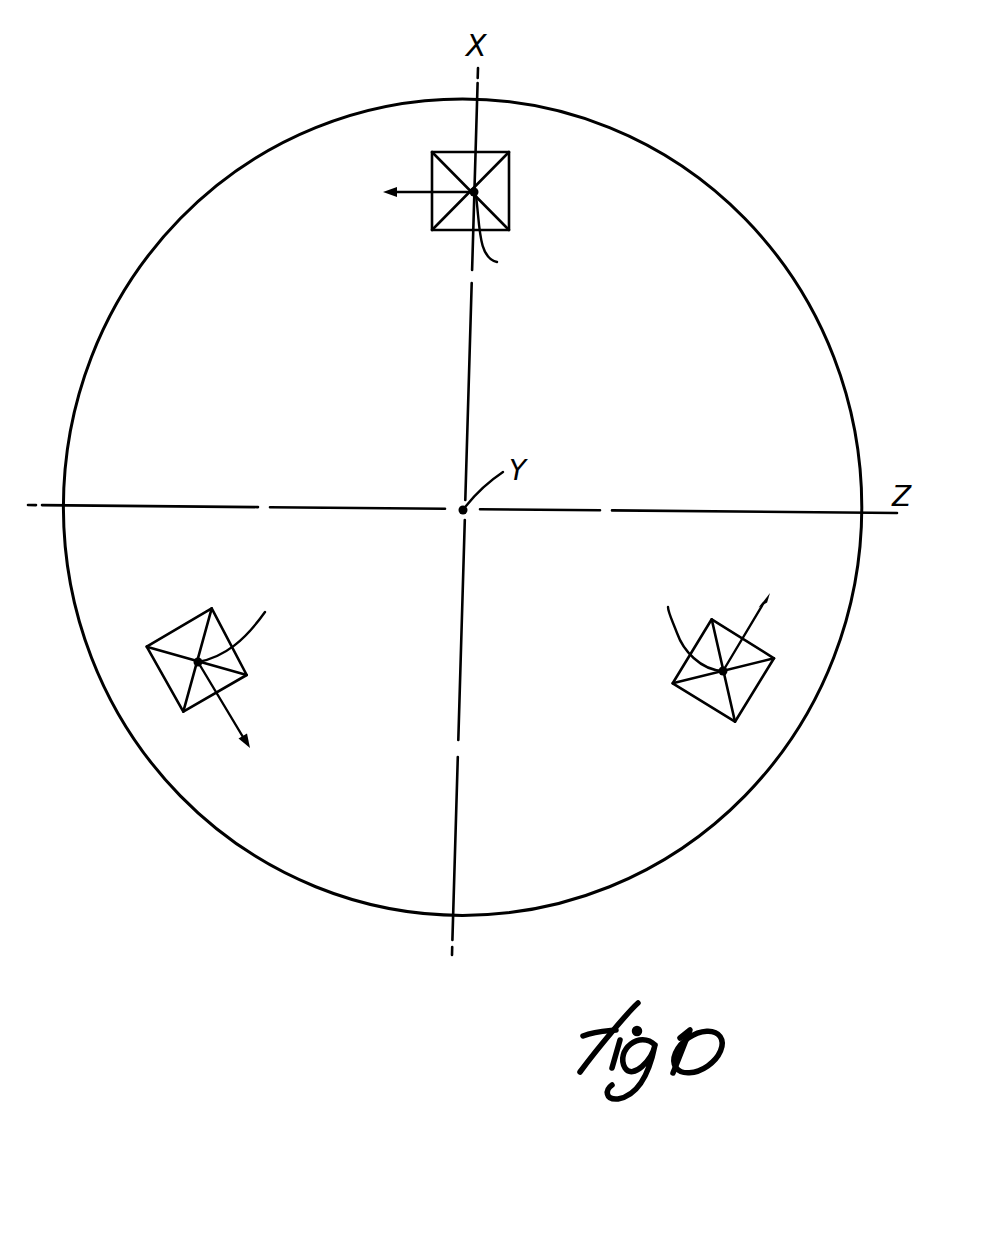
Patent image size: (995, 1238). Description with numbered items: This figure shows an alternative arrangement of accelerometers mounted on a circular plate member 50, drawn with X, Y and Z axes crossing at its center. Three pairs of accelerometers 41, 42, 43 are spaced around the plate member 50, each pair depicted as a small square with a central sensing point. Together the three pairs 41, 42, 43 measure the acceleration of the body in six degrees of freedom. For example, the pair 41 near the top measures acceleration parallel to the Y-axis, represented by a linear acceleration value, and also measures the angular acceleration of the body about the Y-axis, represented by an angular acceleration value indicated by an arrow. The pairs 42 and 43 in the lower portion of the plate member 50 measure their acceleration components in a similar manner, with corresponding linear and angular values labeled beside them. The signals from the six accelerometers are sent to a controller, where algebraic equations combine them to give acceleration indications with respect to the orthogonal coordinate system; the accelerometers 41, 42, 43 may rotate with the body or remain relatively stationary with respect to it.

The plate member 50 is at (258, 105).
The pair of accelerometers 41 is at (509, 161).
The pair of accelerometers 42 is at (163, 685).
The pair of accelerometers 43 is at (752, 703).